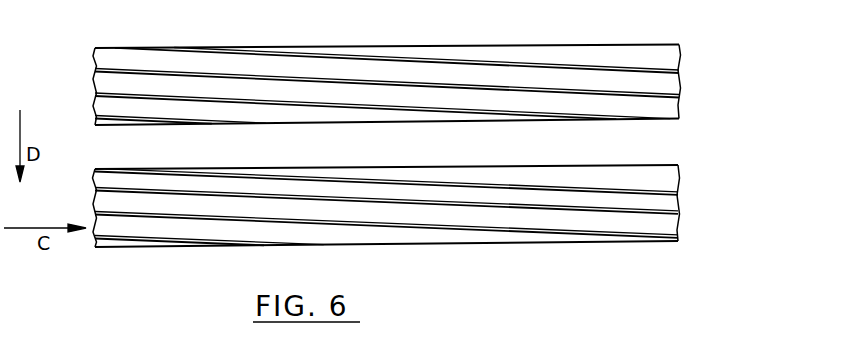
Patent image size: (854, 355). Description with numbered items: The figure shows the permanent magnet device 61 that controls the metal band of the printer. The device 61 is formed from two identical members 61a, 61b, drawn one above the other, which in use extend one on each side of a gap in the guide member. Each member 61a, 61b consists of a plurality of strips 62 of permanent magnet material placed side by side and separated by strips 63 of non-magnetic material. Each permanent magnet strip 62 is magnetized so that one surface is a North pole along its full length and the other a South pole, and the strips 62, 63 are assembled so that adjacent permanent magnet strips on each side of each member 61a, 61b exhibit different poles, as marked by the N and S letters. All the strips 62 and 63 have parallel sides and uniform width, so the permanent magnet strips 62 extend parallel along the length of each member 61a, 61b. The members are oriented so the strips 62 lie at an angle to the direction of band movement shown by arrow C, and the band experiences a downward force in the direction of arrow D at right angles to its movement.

The permanent magnet device 61 is at (692, 33).
The permanent magnet member 61a is at (679, 87).
The permanent magnet member 61b is at (634, 240).
The permanent magnet strip 62 is at (106, 106).
The non-magnetic strip 63 is at (95, 67).